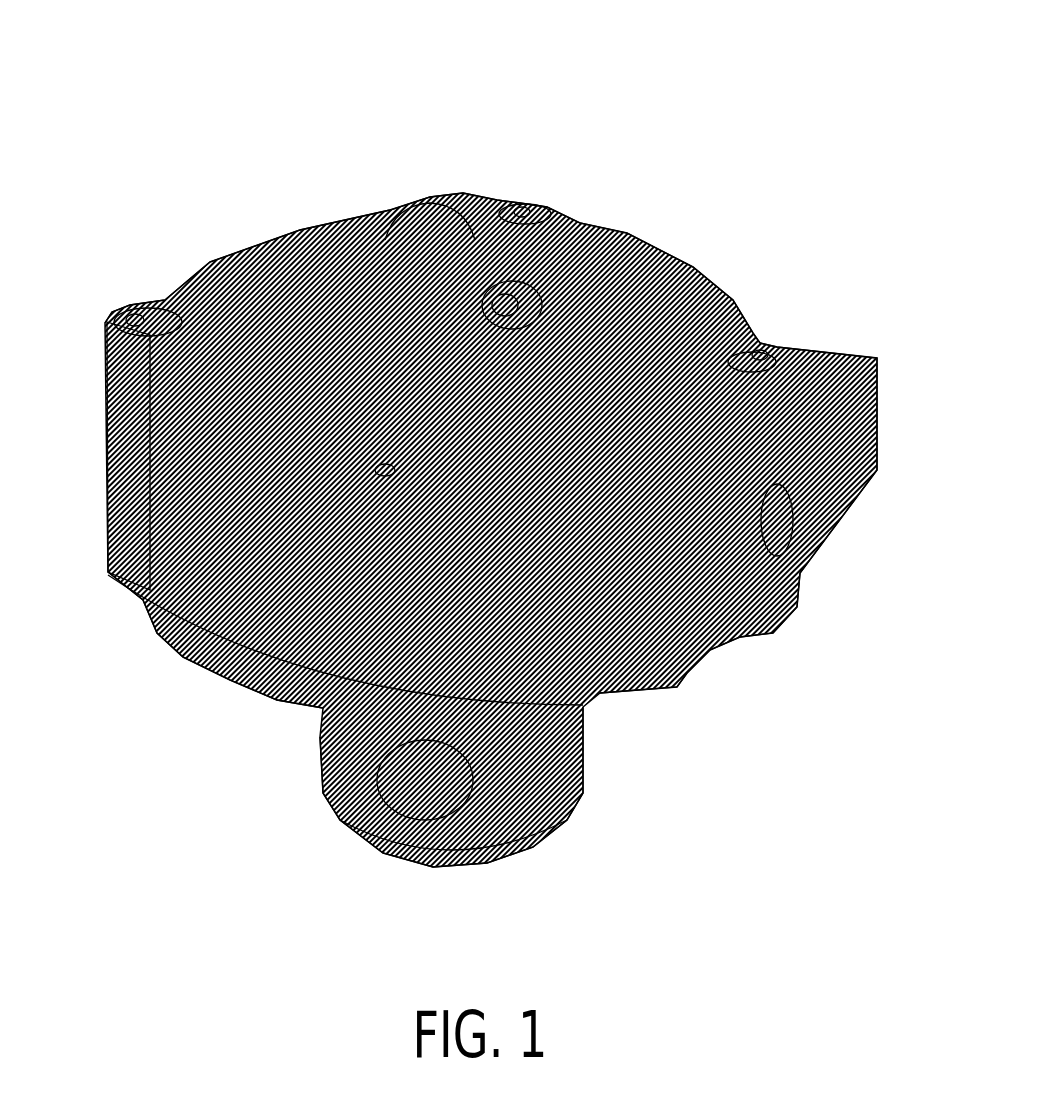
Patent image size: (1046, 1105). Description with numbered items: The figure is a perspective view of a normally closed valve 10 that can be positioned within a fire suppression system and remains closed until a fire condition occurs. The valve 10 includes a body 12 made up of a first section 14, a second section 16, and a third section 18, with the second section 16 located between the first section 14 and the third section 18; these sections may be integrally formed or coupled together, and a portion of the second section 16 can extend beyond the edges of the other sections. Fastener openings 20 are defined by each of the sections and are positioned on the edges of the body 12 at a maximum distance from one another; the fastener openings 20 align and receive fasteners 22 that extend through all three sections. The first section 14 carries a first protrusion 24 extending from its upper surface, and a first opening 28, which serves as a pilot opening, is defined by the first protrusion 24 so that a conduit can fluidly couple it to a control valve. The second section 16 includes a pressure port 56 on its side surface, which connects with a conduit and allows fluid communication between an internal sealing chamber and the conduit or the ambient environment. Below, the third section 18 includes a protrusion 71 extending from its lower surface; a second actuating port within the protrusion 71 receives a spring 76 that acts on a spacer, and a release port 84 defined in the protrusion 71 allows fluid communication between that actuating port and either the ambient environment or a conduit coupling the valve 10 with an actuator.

The valve 10 is at (759, 113).
The body 12 is at (699, 682).
The first section 14 is at (221, 258).
The second section 16 is at (103, 493).
The third section 18 is at (181, 659).
The fastener openings 20 is at (113, 313).
The fasteners 22 is at (134, 306).
The first protrusion 24 is at (414, 195).
The first opening 28 is at (540, 311).
The pressure port 56 is at (798, 558).
The protrusion 71 is at (561, 840).
The spring 76 is at (491, 861).
The release port 84 is at (377, 807).